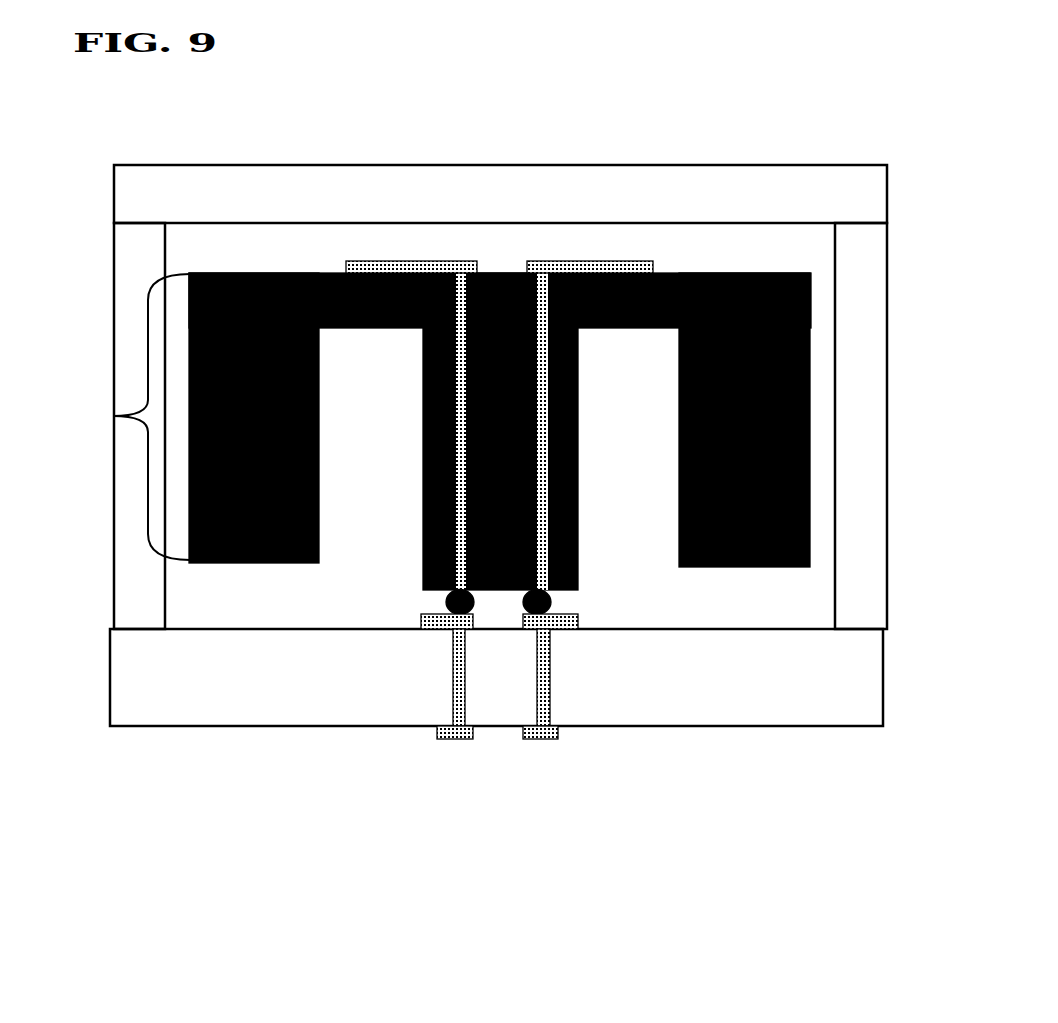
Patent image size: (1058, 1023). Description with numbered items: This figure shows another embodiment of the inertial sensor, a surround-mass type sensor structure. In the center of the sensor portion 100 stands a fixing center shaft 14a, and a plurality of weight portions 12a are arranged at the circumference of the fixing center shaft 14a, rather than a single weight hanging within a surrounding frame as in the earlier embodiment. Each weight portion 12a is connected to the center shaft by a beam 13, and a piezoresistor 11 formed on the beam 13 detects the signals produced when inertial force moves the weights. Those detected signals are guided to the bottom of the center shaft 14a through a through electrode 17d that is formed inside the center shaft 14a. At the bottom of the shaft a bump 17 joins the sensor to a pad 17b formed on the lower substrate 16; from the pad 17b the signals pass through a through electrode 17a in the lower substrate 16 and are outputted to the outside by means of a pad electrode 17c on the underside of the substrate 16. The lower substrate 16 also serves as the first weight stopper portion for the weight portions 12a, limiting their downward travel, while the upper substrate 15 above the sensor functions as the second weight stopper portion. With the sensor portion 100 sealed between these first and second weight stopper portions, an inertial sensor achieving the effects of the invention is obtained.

The sensor portion 100 is at (492, 457).
The upper substrate 15 is at (380, 167).
The lower substrate 16 is at (190, 683).
The piezoresistor 11 is at (656, 273).
The beam 13 is at (617, 328).
The weight portion 12a is at (753, 567).
The fixing center shaft 14a is at (423, 506).
The bump 17 is at (557, 622).
The through electrode 17a is at (547, 686).
The pad 17b is at (430, 626).
The pad electrode 17c is at (553, 742).
The through electrode 17d is at (440, 405).